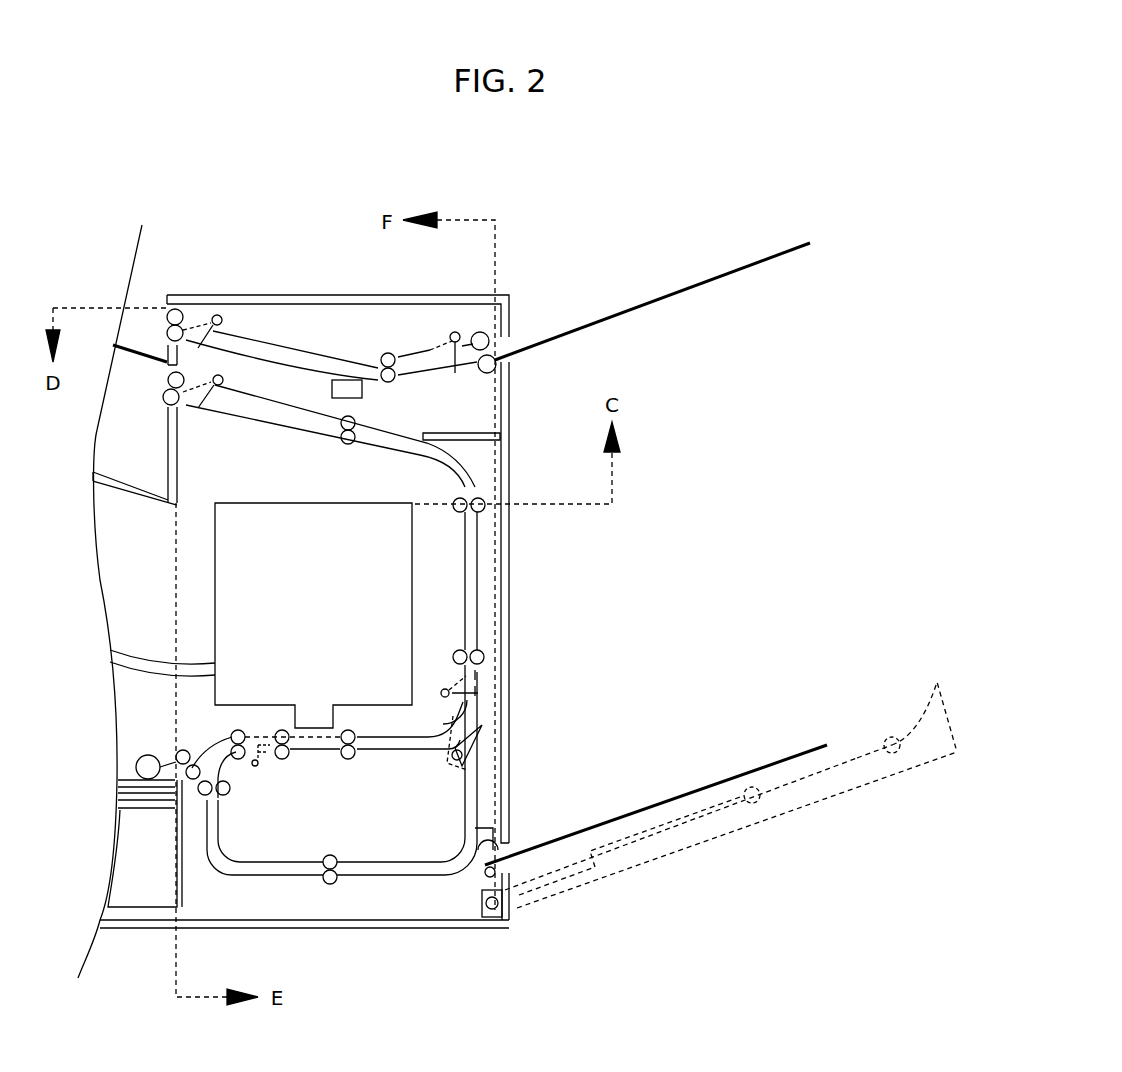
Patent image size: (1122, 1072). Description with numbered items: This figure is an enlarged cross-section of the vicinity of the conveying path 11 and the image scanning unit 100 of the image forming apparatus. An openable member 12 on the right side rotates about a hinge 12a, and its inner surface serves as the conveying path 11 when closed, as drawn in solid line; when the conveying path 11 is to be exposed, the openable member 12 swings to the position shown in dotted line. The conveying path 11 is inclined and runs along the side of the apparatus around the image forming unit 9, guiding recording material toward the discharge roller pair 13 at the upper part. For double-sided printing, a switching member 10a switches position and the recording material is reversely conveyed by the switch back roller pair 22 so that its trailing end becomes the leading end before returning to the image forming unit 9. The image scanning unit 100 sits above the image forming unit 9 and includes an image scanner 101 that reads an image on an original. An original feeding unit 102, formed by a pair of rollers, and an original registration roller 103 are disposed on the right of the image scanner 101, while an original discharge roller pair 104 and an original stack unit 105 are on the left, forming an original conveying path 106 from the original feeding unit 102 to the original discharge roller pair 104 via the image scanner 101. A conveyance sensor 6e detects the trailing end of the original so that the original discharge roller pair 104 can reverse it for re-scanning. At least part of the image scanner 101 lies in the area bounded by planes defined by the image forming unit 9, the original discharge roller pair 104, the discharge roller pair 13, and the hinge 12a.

The original discharge roller pair 104 is at (167, 323).
The conveyance sensor 6e is at (223, 310).
The original conveying path 106 is at (273, 345).
The image scanning unit 100 is at (342, 325).
The original registration roller 103 is at (388, 350).
The original feeding unit 102 is at (509, 335).
The original stack unit 105 is at (145, 358).
The image forming unit 9 is at (233, 530).
The image scanner 101 is at (331, 388).
The discharge roller pair 13 is at (163, 403).
The conveying path 11 is at (500, 577).
The openable member 12 is at (509, 600).
The switch back roller pair 22 is at (482, 660).
The switching member 10a is at (475, 751).
The hinge 12a is at (502, 905).